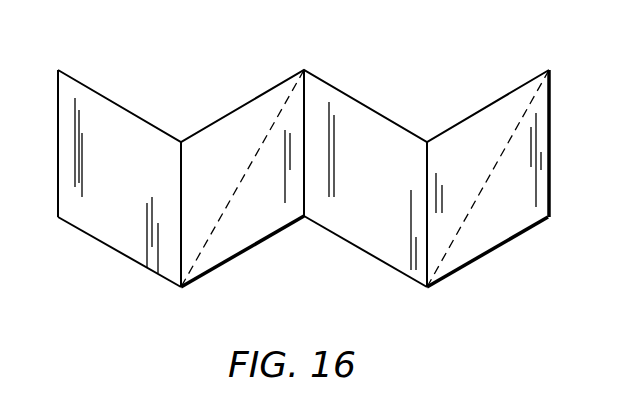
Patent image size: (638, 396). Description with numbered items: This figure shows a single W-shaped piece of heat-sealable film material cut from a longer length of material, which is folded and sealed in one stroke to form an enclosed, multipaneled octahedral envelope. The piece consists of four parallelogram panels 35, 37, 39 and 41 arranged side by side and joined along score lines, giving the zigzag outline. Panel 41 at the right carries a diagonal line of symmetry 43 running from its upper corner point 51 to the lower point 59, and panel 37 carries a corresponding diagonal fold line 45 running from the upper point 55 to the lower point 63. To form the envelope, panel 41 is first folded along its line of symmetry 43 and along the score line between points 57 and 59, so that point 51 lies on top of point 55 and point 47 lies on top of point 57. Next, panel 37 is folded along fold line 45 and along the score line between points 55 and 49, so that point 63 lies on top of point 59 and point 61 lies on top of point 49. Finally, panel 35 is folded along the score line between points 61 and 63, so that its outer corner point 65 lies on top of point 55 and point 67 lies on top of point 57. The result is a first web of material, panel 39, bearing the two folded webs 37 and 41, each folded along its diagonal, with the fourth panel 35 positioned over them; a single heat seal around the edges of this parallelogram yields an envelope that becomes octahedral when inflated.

The panel 35 is at (120, 175).
The panel 37 is at (225, 175).
The panel 39 is at (376, 175).
The panel 41 is at (478, 175).
The line of symmetry 43 is at (486, 183).
The fold line 45 is at (241, 183).
The point 47 is at (548, 217).
The point 49 is at (304, 216).
The point 51 is at (549, 70).
The point 55 is at (304, 70).
The point 57 is at (427, 142).
The point 59 is at (427, 287).
The point 61 is at (181, 142).
The point 63 is at (181, 287).
The point 65 is at (58, 70).
The point 67 is at (58, 217).